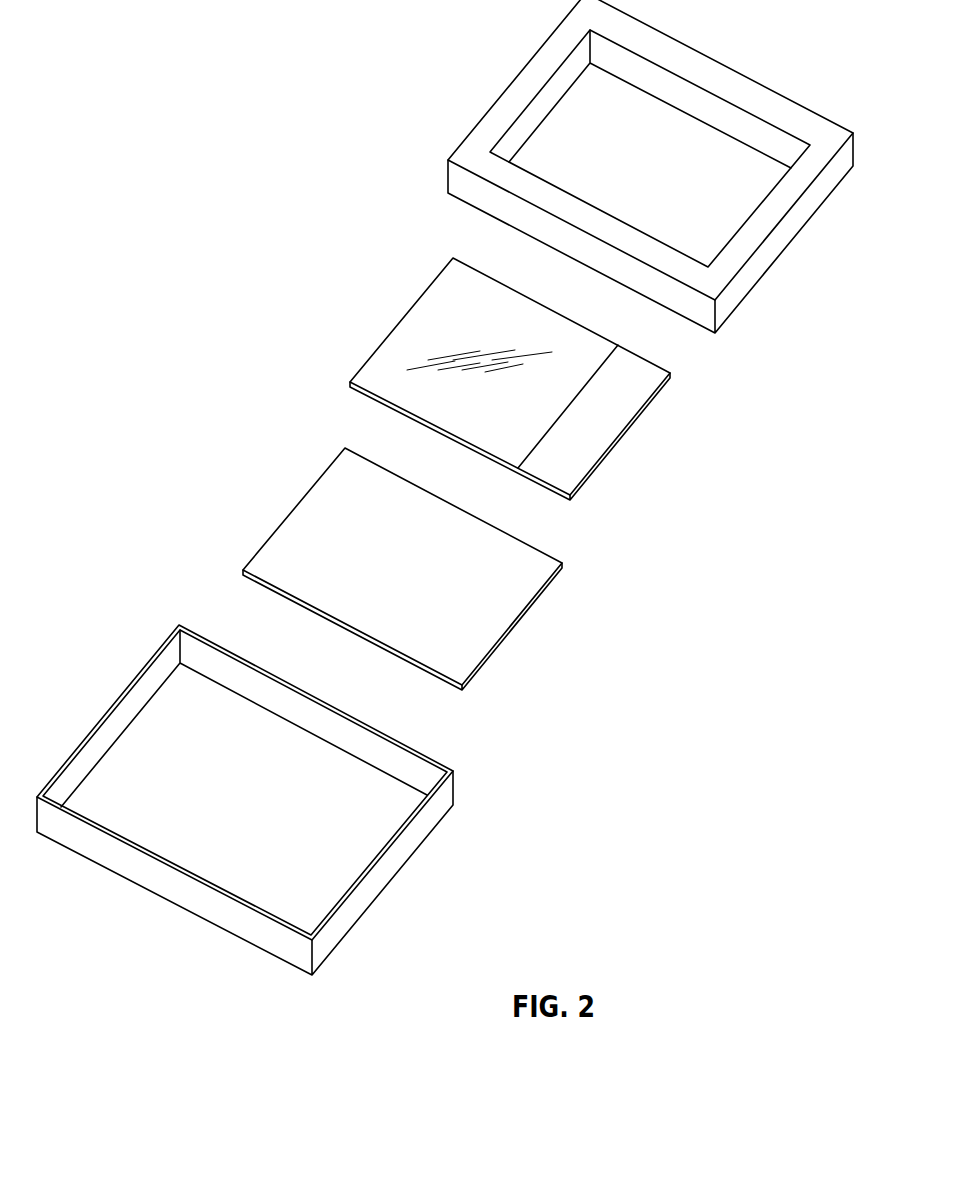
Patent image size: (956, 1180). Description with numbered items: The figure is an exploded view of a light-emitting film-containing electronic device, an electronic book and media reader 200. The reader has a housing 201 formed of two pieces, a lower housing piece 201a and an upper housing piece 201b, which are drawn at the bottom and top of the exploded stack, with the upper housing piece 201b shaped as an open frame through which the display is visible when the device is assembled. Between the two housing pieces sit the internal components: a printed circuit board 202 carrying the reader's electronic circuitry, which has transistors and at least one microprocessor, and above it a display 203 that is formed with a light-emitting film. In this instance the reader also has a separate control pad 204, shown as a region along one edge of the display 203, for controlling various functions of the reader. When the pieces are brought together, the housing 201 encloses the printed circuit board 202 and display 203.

The electronic book and media reader 200 is at (219, 64).
The housing 201 is at (773, 533).
The lower housing piece 201a is at (455, 785).
The upper housing piece 201b is at (772, 268).
The printed circuit board 202 is at (293, 510).
The display 203 is at (412, 307).
The control pad 204 is at (620, 438).